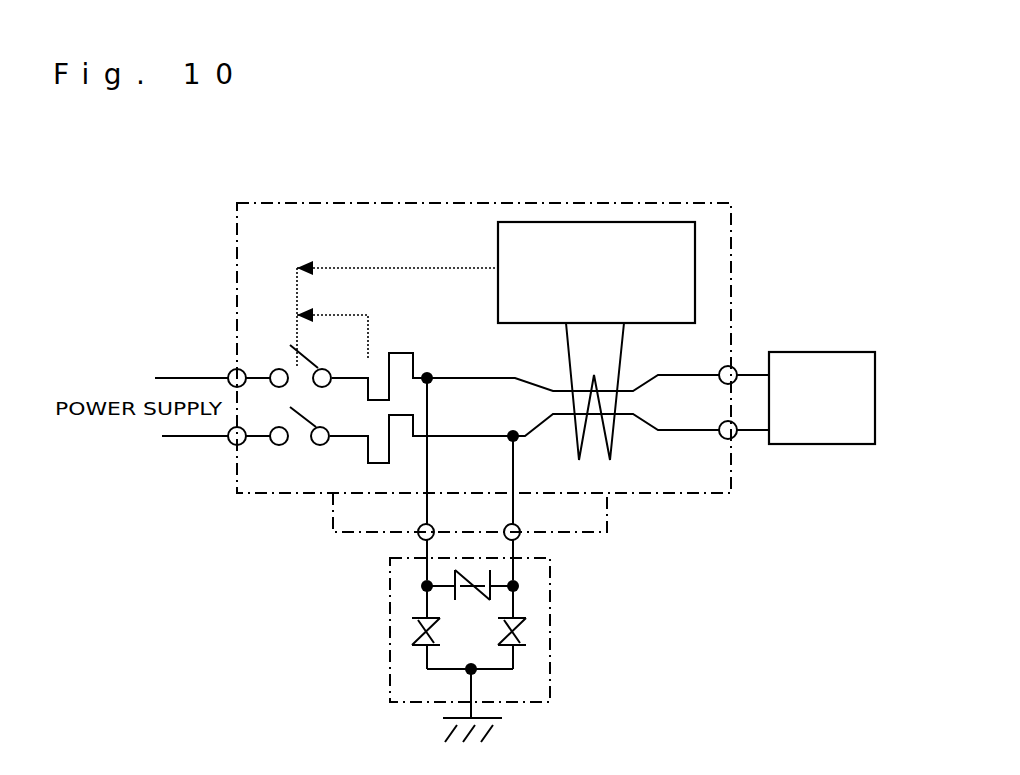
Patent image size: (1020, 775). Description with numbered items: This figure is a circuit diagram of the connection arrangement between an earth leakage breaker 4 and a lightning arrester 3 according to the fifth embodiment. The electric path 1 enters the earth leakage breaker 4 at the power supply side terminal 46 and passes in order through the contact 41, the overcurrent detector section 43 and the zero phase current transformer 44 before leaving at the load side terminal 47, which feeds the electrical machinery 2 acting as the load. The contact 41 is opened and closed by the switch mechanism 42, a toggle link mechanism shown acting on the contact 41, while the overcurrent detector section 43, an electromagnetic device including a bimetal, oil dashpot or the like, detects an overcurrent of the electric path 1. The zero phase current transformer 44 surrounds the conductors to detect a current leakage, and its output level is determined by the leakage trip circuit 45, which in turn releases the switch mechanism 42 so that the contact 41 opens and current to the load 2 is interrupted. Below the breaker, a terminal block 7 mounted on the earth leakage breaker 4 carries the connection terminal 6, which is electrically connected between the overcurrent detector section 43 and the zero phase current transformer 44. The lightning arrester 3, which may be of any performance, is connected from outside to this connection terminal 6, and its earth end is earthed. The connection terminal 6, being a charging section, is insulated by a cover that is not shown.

The electric path 1 is at (447, 378).
The electrical machinery 2 is at (838, 352).
The lightning arrester 3 is at (527, 632).
The earth leakage breaker 4 is at (298, 203).
The connection terminal 6 is at (419, 538).
The terminal block 7 is at (612, 522).
The contact 41 is at (300, 432).
The switch mechanism 42 is at (290, 295).
The overcurrent detector section 43 is at (402, 353).
The zero phase current transformer 44 is at (612, 436).
The leakage trip circuit 45 is at (588, 222).
The power supply side terminal 46 is at (228, 374).
The load side terminal 47 is at (728, 366).